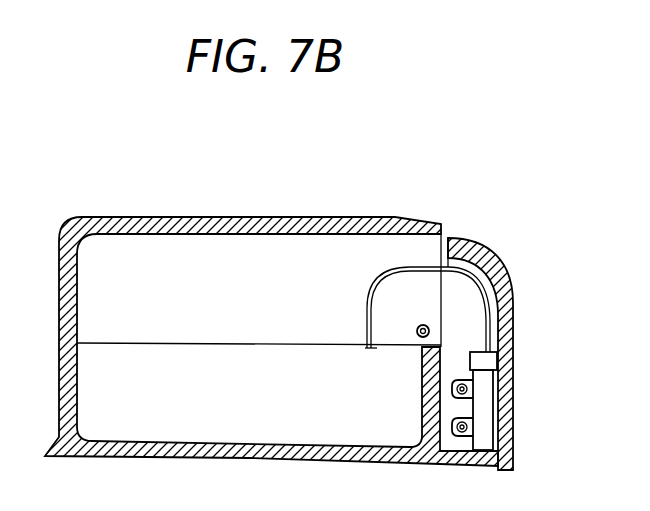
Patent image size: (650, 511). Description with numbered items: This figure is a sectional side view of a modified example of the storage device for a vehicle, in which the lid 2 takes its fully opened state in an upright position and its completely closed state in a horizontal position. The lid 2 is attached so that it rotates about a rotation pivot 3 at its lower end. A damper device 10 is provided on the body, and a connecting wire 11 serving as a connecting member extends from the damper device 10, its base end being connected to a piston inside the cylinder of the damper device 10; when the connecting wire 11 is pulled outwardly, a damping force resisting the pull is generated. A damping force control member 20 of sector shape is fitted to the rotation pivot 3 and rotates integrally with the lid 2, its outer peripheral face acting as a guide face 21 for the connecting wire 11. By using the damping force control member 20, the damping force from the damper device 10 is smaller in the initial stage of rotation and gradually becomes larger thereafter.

The lid 2 is at (318, 217).
The rotation pivot 3 is at (418, 337).
The damper device 10 is at (472, 408).
The connecting wire 11 is at (468, 241).
The damping force control member 20 is at (402, 263).
The guide face 21 is at (373, 288).